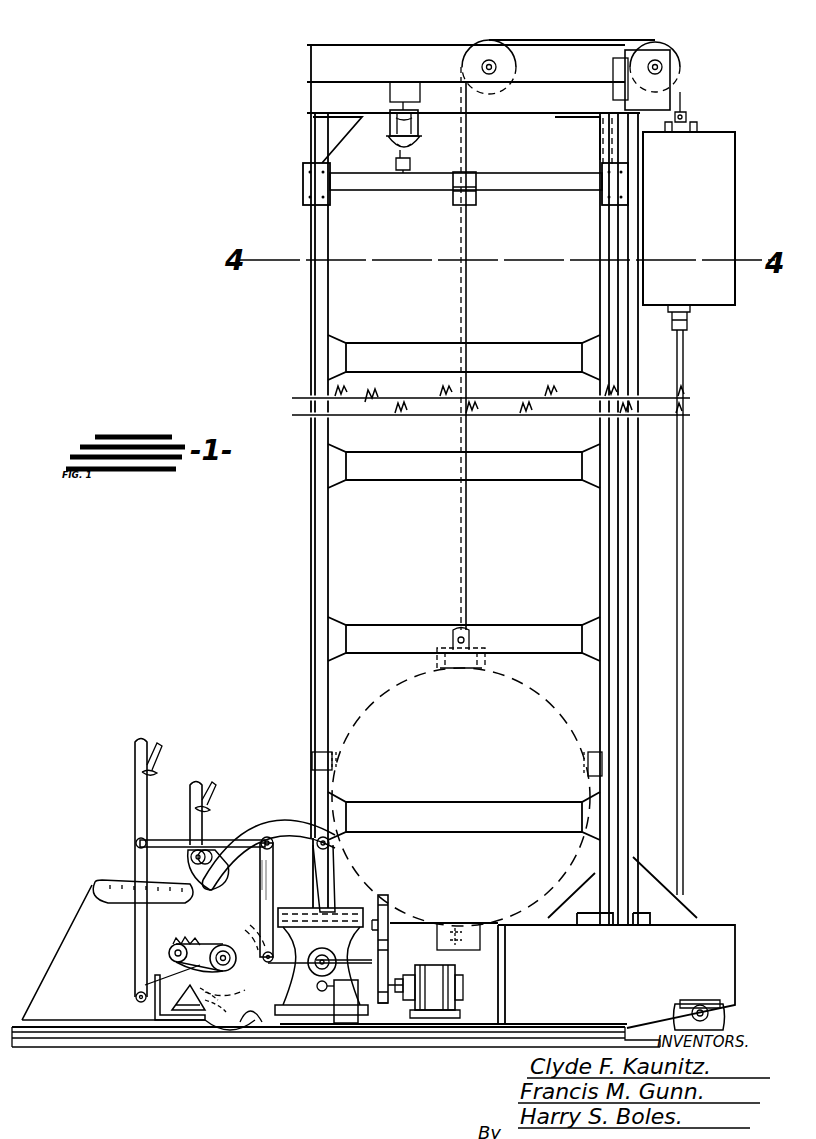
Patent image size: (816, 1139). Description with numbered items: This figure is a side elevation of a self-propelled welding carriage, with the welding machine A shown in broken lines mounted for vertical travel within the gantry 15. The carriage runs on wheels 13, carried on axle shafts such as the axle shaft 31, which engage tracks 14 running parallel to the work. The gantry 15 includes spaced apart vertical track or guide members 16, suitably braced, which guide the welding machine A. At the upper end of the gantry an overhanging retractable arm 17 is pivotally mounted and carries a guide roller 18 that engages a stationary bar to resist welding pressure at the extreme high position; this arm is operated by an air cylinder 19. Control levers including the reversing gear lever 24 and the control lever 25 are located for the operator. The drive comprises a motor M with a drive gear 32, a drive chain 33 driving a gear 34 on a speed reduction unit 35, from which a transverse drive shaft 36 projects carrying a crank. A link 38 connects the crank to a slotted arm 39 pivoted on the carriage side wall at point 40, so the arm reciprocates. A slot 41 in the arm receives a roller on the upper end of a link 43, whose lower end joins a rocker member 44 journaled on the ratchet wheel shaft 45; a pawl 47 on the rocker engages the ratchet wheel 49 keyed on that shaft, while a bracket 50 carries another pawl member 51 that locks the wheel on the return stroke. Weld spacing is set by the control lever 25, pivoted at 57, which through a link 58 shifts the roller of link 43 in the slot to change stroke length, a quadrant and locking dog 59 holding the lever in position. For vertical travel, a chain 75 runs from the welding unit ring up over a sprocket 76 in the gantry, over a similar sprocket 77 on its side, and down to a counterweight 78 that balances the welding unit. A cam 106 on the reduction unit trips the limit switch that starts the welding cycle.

The wheels 13 is at (724, 1016).
The tracks 14 is at (37, 1040).
The gantry 15 is at (338, 527).
The vertical track or guide members 16 is at (328, 574).
The overhanging retractable arm 17 is at (417, 183).
The guide roller 18 is at (478, 200).
The air cylinder 19 is at (388, 123).
The reversing gear lever 24 is at (197, 790).
The control lever 25 is at (138, 796).
The axle shaft 31 is at (706, 1000).
The drive gear 32 is at (384, 1005).
The drive chain 33 is at (376, 960).
The gear 34 is at (392, 912).
The speed reduction unit 35 is at (322, 1002).
The drive shaft 36 is at (318, 973).
The link 38 is at (328, 882).
The slotted arm 39 is at (258, 830).
The pivot point 40 is at (208, 848).
The slot 41 is at (290, 838).
The link 43 is at (274, 868).
The rocker member 44 is at (250, 1020).
The ratchet wheel shaft 45 is at (223, 952).
The pawl 47 is at (178, 970).
The ratchet wheel 49 is at (210, 1022).
The bracket 50 is at (186, 1003).
The pawl member 51 is at (157, 990).
The pivot 57 is at (141, 995).
The link 58 is at (170, 840).
The quadrant and locking dog 59 is at (124, 888).
The chain 75 is at (460, 541).
The sprocket 76 is at (487, 43).
The sprocket 77 is at (676, 63).
The counterweight 78 is at (718, 228).
The cam 106 is at (340, 958).
The motor M is at (438, 1018).
The welding machine A is at (560, 722).